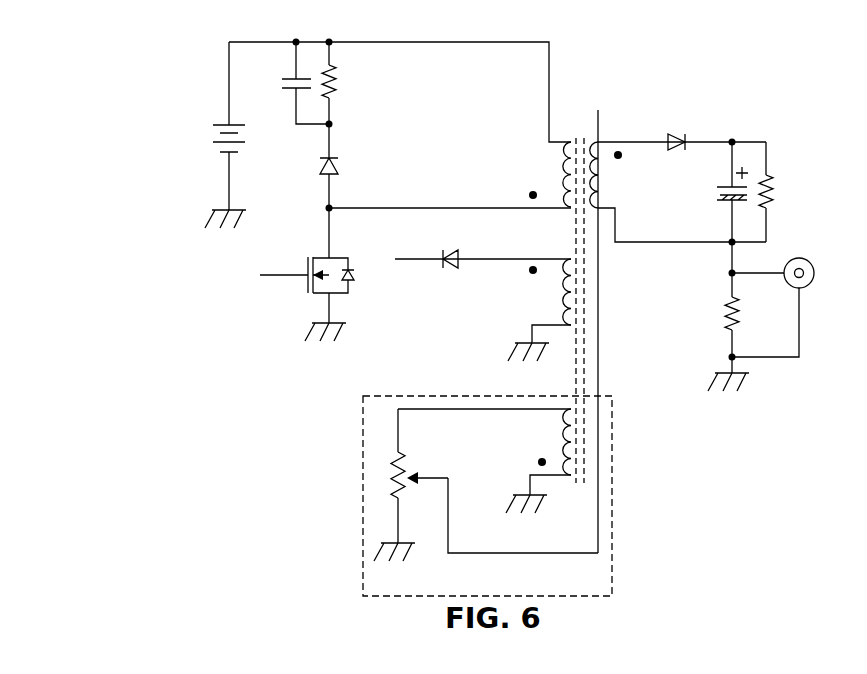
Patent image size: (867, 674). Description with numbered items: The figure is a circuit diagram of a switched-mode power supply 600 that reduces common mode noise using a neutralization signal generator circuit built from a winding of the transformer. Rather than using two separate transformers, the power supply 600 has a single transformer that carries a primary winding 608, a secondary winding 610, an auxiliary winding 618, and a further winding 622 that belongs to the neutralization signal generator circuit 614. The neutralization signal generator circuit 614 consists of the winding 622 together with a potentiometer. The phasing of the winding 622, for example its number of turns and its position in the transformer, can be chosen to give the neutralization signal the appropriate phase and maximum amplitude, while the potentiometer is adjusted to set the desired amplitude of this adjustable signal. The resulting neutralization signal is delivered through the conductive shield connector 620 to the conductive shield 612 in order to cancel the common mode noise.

The power supply 600 is at (148, 32).
The primary winding 608 is at (569, 176).
The secondary winding 610 is at (587, 185).
The conductive shield 612 is at (598, 112).
The neutralization signal generator circuit 614 is at (612, 498).
The auxiliary winding 618 is at (567, 293).
The conductive shield connector 620 is at (598, 322).
The winding 622 is at (573, 452).